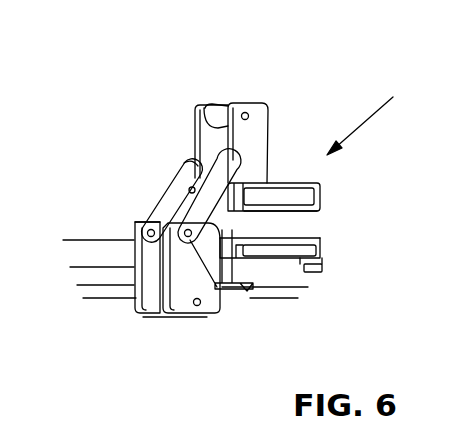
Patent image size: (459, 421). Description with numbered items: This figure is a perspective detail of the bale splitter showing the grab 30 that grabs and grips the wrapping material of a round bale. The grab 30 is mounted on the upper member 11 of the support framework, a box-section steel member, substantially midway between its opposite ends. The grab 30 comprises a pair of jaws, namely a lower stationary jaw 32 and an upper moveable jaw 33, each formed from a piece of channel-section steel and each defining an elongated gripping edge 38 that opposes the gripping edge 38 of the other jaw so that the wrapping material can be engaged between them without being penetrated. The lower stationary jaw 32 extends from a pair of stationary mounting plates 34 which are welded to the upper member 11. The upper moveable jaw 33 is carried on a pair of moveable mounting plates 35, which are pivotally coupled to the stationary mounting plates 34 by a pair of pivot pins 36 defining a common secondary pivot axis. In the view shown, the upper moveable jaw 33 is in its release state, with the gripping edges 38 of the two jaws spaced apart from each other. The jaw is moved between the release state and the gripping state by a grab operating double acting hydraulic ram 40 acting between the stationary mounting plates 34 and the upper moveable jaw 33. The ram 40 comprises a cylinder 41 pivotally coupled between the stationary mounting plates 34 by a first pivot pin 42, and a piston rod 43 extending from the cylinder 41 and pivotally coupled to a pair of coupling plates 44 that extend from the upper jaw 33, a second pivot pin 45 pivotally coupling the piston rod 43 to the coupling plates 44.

The upper member 11 is at (276, 299).
The grab 30 is at (378, 115).
The lower stationary jaw 32 is at (320, 262).
The upper moveable jaw 33 is at (321, 193).
The stationary mounting plates 34 is at (148, 297).
The moveable mounting plates 35 is at (167, 200).
The pivot pins 36 is at (140, 222).
The gripping edge 38 is at (318, 210).
The grab operating double acting hydraulic ram 40 is at (180, 168).
The cylinder 41 is at (193, 162).
The first pivot pin 42 is at (198, 306).
The piston rod 43 is at (217, 147).
The coupling plates 44 is at (252, 137).
The second pivot pin 45 is at (247, 114).